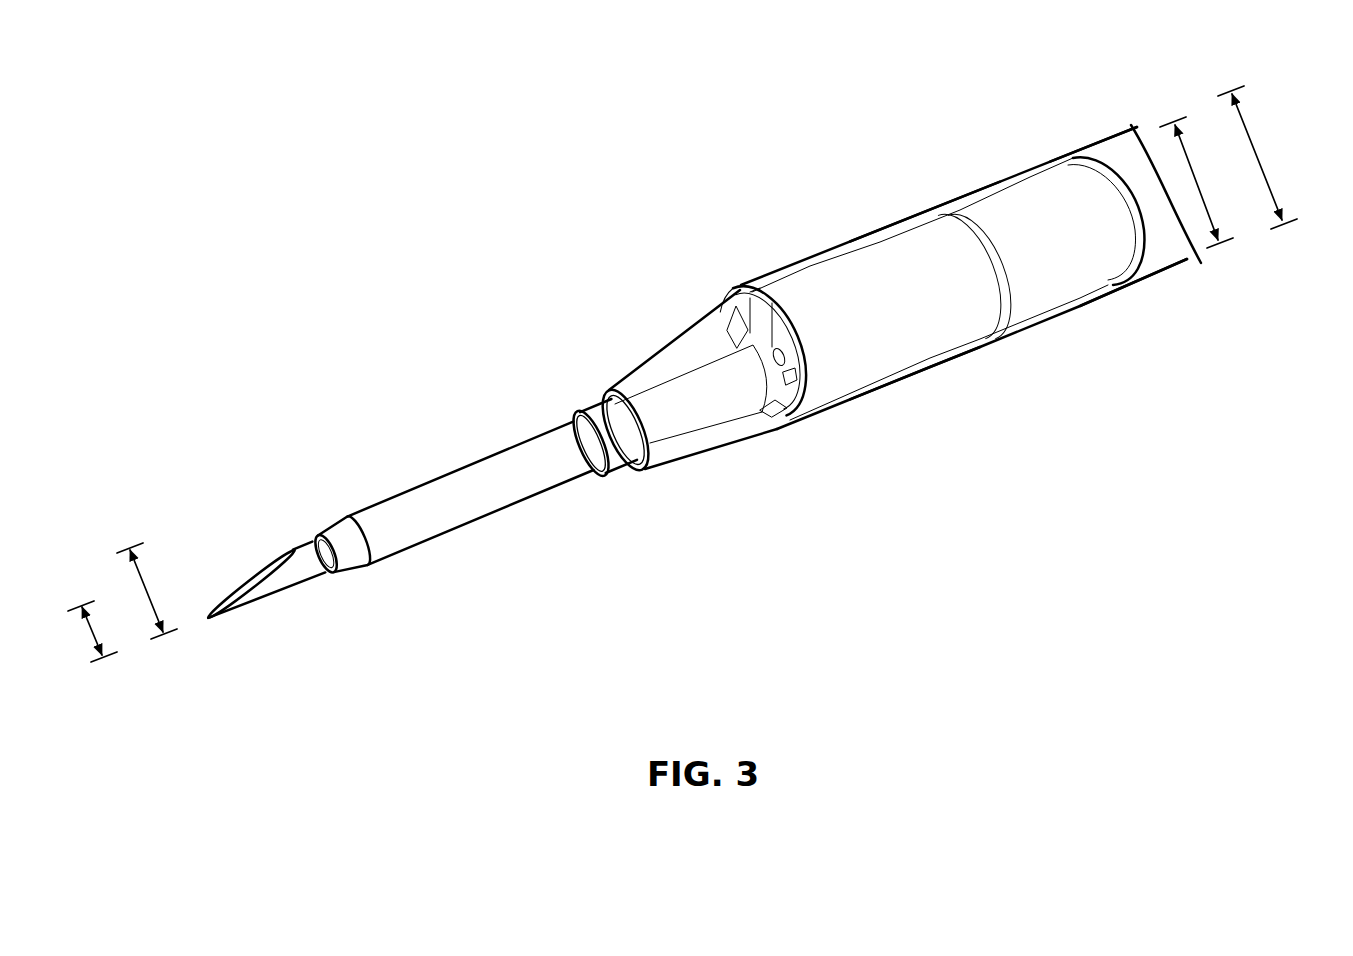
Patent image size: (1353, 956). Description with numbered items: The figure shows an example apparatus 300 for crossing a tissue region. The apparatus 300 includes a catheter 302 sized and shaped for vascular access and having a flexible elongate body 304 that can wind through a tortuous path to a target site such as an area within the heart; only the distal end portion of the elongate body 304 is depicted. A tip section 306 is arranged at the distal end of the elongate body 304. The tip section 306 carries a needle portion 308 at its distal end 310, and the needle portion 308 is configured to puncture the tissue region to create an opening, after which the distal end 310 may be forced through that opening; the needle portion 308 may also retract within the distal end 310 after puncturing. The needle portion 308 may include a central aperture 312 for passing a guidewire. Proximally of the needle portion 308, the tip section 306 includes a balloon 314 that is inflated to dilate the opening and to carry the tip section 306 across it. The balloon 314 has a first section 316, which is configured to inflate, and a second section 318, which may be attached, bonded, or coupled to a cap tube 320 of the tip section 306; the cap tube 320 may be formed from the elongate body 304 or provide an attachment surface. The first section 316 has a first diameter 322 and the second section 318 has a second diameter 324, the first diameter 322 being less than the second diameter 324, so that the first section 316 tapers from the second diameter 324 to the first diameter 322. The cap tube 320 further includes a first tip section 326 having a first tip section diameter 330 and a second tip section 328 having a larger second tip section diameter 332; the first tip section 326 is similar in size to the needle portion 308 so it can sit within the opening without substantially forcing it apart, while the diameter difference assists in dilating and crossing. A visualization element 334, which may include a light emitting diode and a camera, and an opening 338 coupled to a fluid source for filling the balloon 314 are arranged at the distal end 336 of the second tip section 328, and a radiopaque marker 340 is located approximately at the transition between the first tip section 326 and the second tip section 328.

The apparatus 300 is at (701, 409).
The catheter 302 is at (1172, 273).
The elongate body 304 is at (1110, 148).
The tip section 306 is at (971, 261).
The needle portion 308 is at (247, 549).
The distal end 310 is at (335, 486).
The central aperture 312 is at (226, 586).
The balloon 314 is at (761, 352).
The first section 316 is at (732, 352).
The second section 318 is at (887, 226).
The cap tube 320 is at (908, 326).
The first diameter 322 is at (1215, 245).
The second diameter 324 is at (1278, 230).
The first tip section 326 is at (660, 455).
The second tip section 328 is at (887, 388).
The first tip section diameter 330 is at (99, 663).
The second tip section diameter 332 is at (160, 640).
The visualization element 334 is at (730, 327).
The distal end 336 is at (782, 413).
The opening 338 is at (783, 360).
The radiopaque marker 340 is at (750, 290).